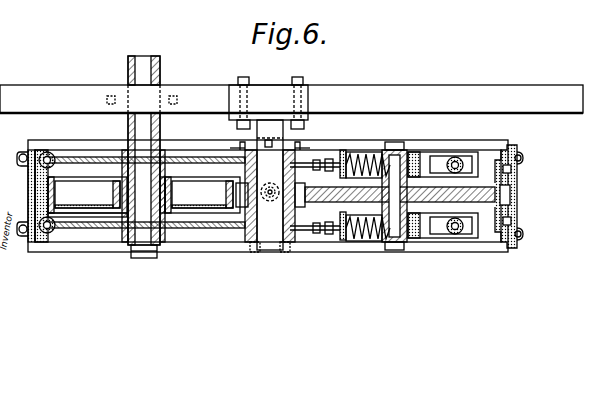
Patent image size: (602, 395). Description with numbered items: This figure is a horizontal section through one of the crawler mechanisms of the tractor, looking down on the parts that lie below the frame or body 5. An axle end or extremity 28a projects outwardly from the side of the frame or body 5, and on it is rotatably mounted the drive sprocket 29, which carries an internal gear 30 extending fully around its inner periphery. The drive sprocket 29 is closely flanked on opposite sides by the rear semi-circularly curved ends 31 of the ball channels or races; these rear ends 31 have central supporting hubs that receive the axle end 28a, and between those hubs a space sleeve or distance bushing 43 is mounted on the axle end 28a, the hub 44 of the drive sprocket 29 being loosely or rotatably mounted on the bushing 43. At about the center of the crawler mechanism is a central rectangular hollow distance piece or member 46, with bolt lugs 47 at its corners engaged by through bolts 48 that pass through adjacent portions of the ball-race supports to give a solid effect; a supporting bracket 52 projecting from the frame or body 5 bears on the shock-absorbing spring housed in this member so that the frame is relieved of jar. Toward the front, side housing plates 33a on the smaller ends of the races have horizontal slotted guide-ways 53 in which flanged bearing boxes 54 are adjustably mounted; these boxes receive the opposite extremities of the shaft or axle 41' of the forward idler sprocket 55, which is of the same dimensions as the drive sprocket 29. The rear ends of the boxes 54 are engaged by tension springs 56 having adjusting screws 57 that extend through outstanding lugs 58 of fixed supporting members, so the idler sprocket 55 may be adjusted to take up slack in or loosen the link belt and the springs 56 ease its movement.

The frame or body 5 is at (459, 87).
The axle end or extremity 28a is at (166, 66).
The drive sprocket 29 is at (88, 196).
The internal gear 30 is at (240, 230).
The rear semi-circularly curved ends of the ball channels or races 31 is at (98, 158).
The side housing plates 33a is at (428, 155).
The shaft or axle of the forward idler sprocket 41' is at (395, 225).
The space sleeve or distance bushing 43 is at (200, 196).
The hub of the drive sprocket 44 is at (117, 215).
The central rectangular hollow distance piece or member 46 is at (243, 176).
The bolt lugs 47 is at (163, 153).
The through bolts 48 is at (248, 246).
The supporting bracket 52 is at (277, 146).
The horizontal slotted guide-ways 53 is at (416, 152).
The flanged bearing boxes 54 is at (378, 152).
The forward idler sprocket 55 is at (519, 184).
The tension springs 56 is at (344, 238).
The adjusting screws 57 is at (322, 232).
The outstanding lugs 58 is at (338, 152).